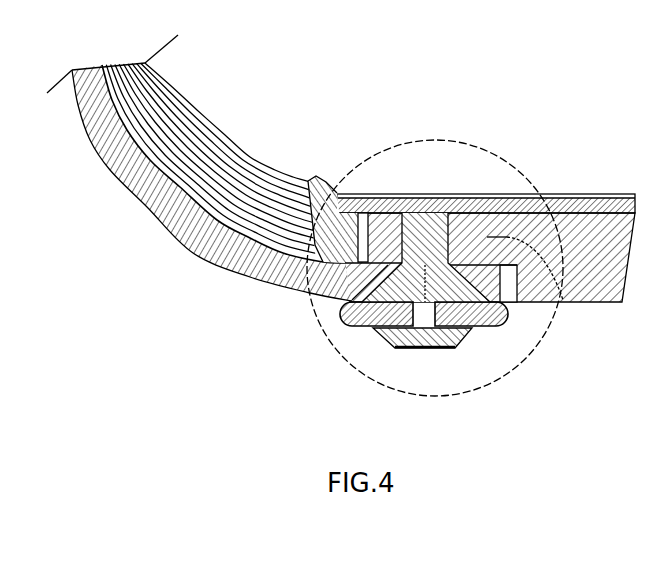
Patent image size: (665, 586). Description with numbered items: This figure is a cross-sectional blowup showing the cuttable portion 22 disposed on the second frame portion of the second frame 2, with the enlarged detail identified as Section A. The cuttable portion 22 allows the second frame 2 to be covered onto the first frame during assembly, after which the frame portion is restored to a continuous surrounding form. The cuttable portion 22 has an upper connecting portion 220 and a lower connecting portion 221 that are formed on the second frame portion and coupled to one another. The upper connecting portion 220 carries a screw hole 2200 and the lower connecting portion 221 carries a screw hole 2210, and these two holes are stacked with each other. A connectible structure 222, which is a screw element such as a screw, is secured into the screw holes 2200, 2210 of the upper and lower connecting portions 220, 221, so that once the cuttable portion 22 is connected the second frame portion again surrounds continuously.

The second frame 2 is at (247, 280).
The cuttable portion 22 is at (629, 385).
The lower connecting portion 221 is at (563, 300).
The connectible structure 222 is at (436, 348).
The screw hole 2200 is at (370, 322).
The upper connecting portion 220 is at (504, 300).
The screw hole 2210 is at (423, 348).
The Section A is at (493, 153).